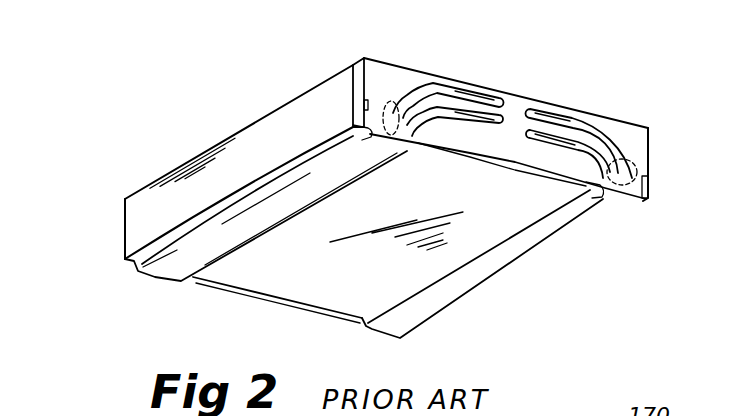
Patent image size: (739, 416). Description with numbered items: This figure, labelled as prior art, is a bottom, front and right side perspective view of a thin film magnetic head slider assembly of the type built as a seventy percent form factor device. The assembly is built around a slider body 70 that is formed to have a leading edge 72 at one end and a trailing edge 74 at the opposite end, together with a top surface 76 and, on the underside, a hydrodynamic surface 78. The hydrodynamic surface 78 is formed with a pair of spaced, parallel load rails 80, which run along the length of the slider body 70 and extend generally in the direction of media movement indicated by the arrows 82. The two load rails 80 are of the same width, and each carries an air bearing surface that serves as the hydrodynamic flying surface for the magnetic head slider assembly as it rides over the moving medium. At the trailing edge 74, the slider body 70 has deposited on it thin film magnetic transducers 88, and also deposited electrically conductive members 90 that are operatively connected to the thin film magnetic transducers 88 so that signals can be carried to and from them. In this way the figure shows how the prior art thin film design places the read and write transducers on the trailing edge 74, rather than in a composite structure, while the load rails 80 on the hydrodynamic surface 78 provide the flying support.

The slider body 70 is at (281, 131).
The leading edge 72 is at (124, 223).
The trailing edge 74 is at (635, 135).
The top surface 76 is at (523, 97).
The hydrodynamic surface 78 is at (500, 213).
The load rails 80 is at (166, 280).
The arrows 82 is at (121, 313).
The thin film magnetic transducers 88 is at (395, 102).
The electrically conductive members 90 is at (468, 97).